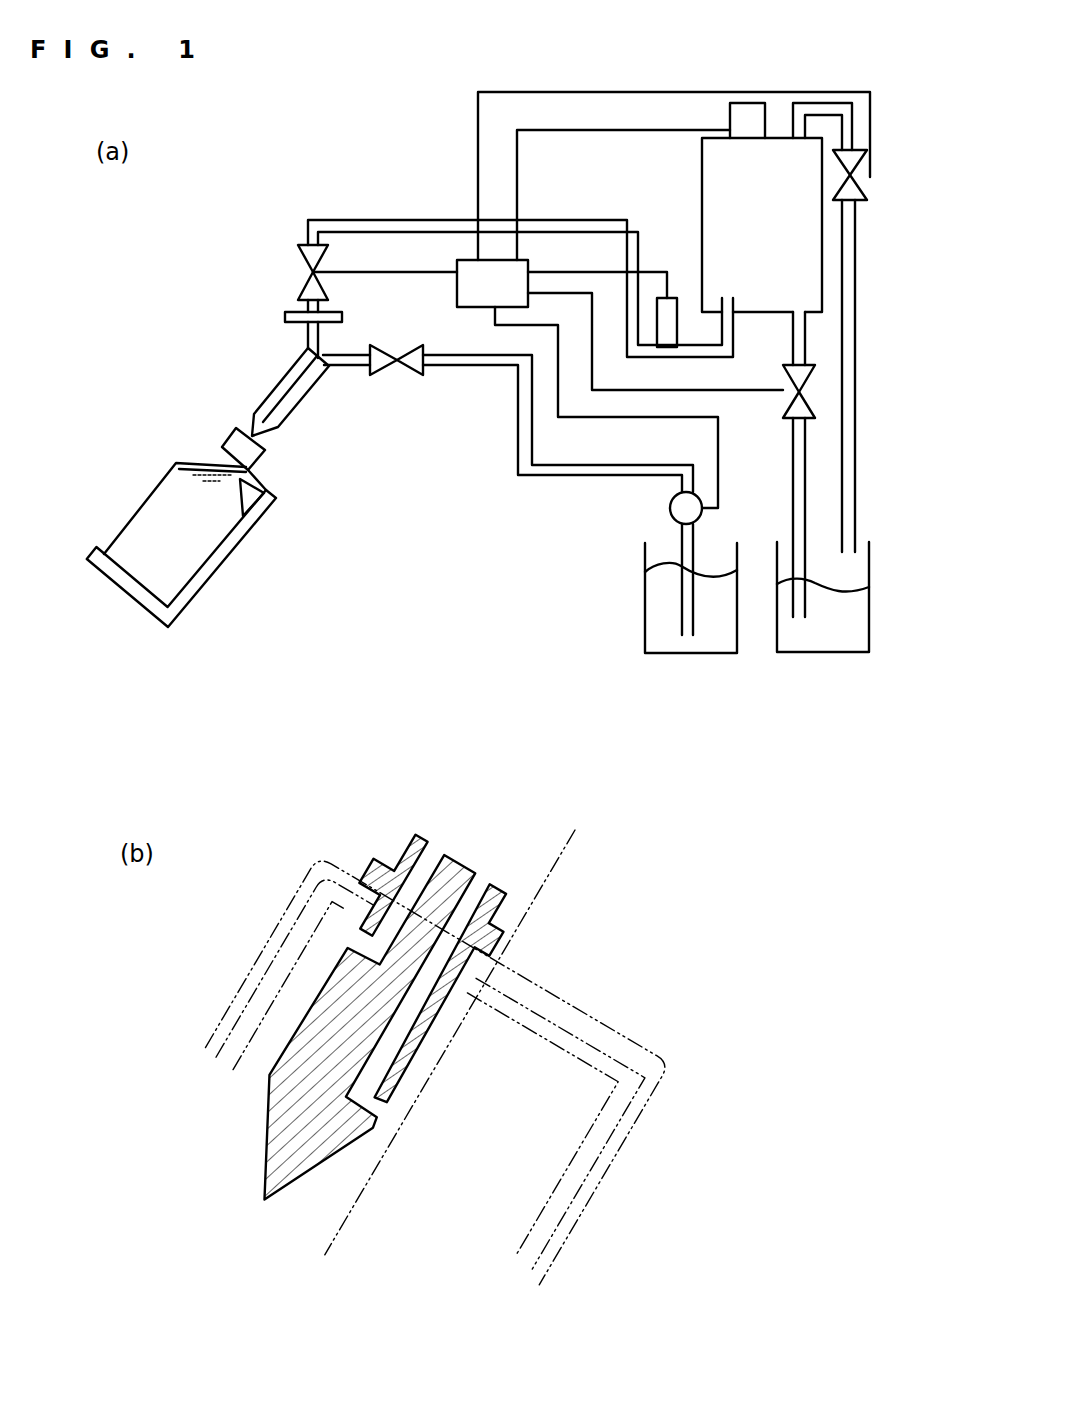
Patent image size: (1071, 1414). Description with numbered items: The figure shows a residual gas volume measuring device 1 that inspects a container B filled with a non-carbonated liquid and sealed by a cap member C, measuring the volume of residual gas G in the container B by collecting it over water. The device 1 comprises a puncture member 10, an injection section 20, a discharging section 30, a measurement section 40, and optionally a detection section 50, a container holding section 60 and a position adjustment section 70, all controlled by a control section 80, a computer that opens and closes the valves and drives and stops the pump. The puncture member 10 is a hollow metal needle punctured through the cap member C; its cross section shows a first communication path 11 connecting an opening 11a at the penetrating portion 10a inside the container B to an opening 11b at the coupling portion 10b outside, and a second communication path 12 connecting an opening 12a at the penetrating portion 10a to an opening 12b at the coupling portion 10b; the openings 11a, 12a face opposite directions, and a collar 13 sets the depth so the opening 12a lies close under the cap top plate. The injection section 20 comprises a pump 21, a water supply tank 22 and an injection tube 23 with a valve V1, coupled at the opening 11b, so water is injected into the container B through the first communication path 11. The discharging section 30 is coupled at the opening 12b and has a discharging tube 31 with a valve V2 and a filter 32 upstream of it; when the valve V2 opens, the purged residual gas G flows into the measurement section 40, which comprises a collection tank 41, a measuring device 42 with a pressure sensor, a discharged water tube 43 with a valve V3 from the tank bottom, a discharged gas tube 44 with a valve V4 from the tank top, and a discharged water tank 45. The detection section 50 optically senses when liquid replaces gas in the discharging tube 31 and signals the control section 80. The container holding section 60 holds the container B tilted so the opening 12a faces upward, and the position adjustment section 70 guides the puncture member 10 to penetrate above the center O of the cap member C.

The residual gas volume measuring device 1 is at (385, 118).
The puncture member 10 is at (294, 372).
The penetrating portion 10a is at (333, 1158).
The coupling portion 10b is at (417, 836).
The first communication path 11 is at (444, 997).
The opening 11a is at (385, 1099).
The opening 11b is at (488, 882).
The second communication path 12 is at (354, 1026).
The opening 12a is at (360, 942).
The opening 12b is at (442, 852).
The collar 13 is at (490, 953).
The injection section 20 is at (530, 499).
The pump 21 is at (669, 508).
The water supply tank 22 is at (643, 612).
The injection tube 23 is at (508, 427).
The discharging section 30 is at (440, 257).
The discharging tube 31 is at (352, 219).
The filter 32 is at (290, 315).
The measurement section 40 is at (707, 374).
The collection tank 41 is at (702, 178).
The measuring device 42 is at (728, 108).
The discharged water tube 43 is at (775, 464).
The discharged gas tube 44 is at (865, 327).
The discharged water tank 45 is at (870, 553).
The detection section 50 is at (667, 296).
The container holding section 60 is at (187, 607).
The position adjustment section 70 is at (277, 500).
The control section 80 is at (457, 265).
The container B is at (147, 500).
The cap member C is at (263, 455).
The residual gas G is at (218, 460).
The center O is at (450, 1042).
The valve V1 is at (396, 377).
The valve V2 is at (295, 272).
The valve V3 is at (786, 377).
The valve V4 is at (868, 189).